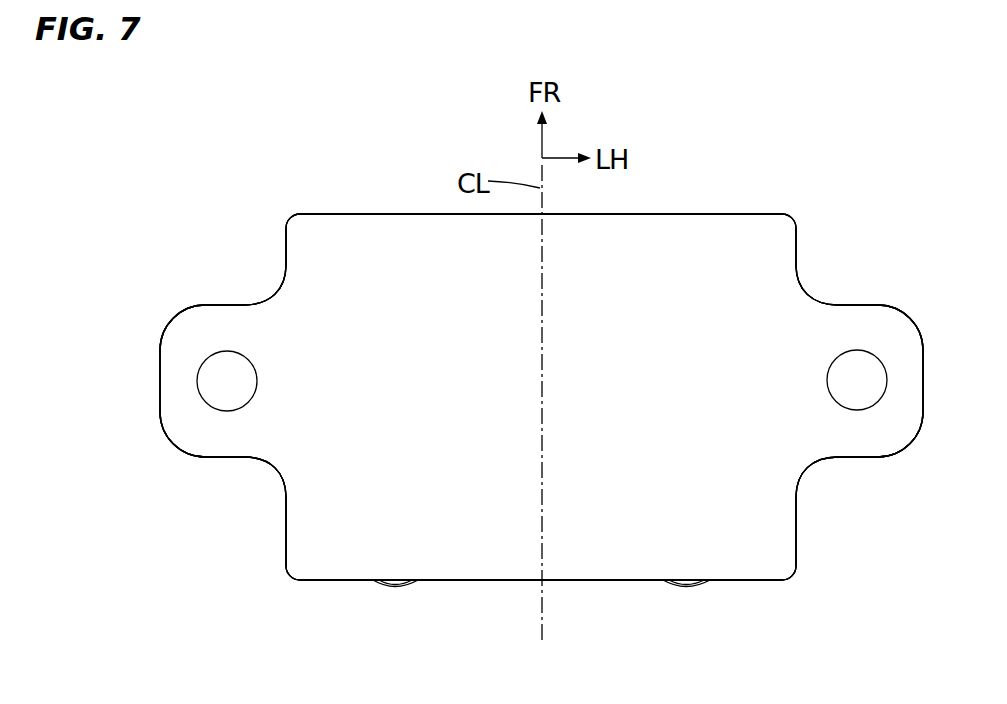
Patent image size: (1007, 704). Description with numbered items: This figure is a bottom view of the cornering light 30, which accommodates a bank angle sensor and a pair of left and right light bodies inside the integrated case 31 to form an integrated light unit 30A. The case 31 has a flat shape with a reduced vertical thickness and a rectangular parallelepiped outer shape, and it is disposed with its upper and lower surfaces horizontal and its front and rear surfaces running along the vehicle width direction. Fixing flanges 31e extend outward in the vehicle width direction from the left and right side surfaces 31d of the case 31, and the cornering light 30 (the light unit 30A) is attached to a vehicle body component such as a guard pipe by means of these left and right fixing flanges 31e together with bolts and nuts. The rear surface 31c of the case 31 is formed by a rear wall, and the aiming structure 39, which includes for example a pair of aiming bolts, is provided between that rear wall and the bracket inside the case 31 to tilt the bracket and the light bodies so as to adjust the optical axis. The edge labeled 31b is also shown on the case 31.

The cornering light 30 is at (288, 210).
The integrated light unit 30A is at (541, 346).
The case 31 is at (345, 213).
The front edge of bracket body 31b is at (424, 213).
The rear surface 31c is at (475, 581).
The side surface 31d is at (797, 248).
The fixing flange 31e is at (885, 322).
The aiming structure 39 is at (390, 584).